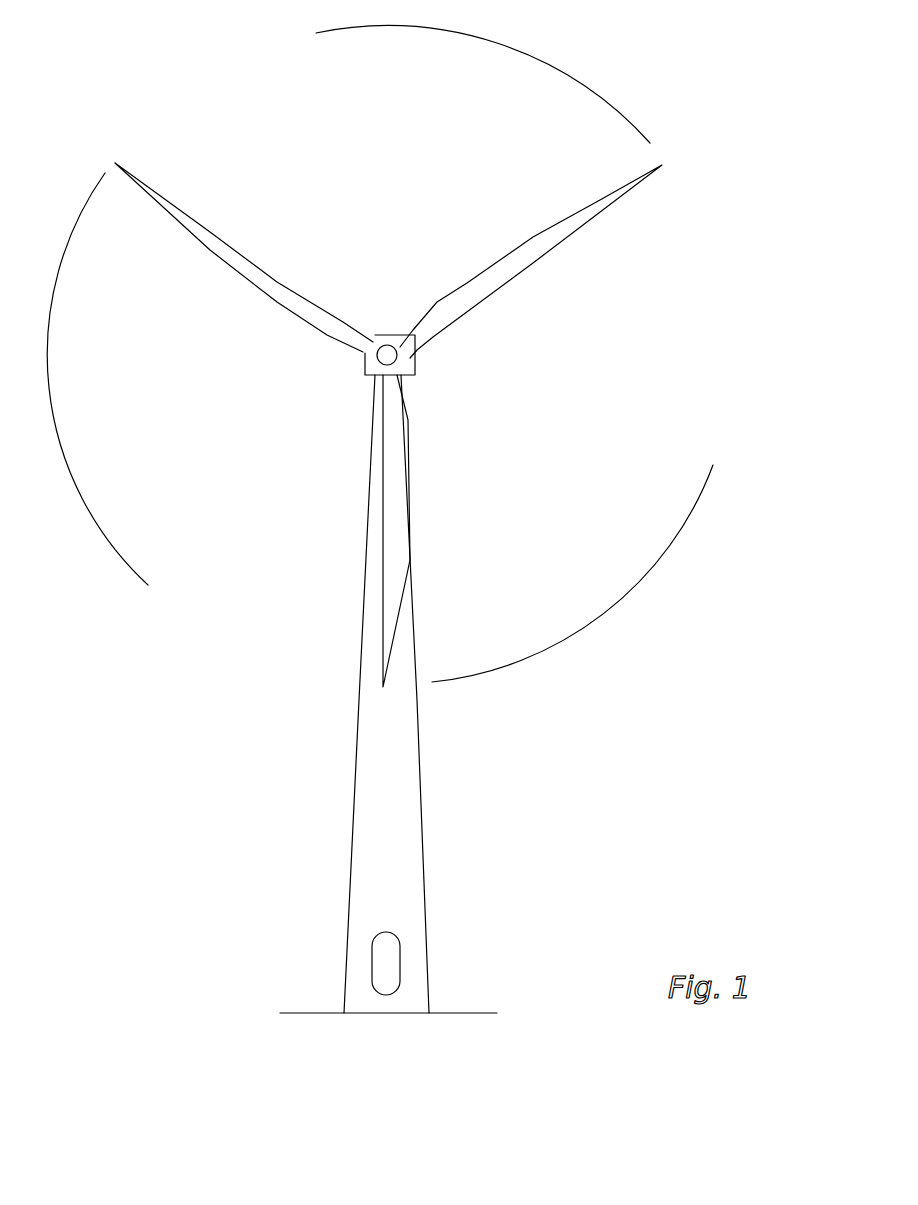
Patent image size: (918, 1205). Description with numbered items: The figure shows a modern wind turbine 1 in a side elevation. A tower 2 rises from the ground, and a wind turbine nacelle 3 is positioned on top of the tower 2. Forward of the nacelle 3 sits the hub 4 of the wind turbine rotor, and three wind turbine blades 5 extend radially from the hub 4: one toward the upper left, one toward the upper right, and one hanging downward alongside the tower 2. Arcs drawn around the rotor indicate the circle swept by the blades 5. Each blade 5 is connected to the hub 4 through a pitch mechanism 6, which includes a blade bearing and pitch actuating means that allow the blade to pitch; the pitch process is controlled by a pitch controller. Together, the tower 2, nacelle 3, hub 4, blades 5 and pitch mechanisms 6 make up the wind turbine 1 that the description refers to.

The wind turbine 1 is at (380, 519).
The tower 2 is at (393, 743).
The wind turbine nacelle 3 is at (415, 373).
The hub 4 is at (400, 335).
The wind turbine blades 5 is at (392, 562).
The pitch mechanisms 6 is at (380, 356).